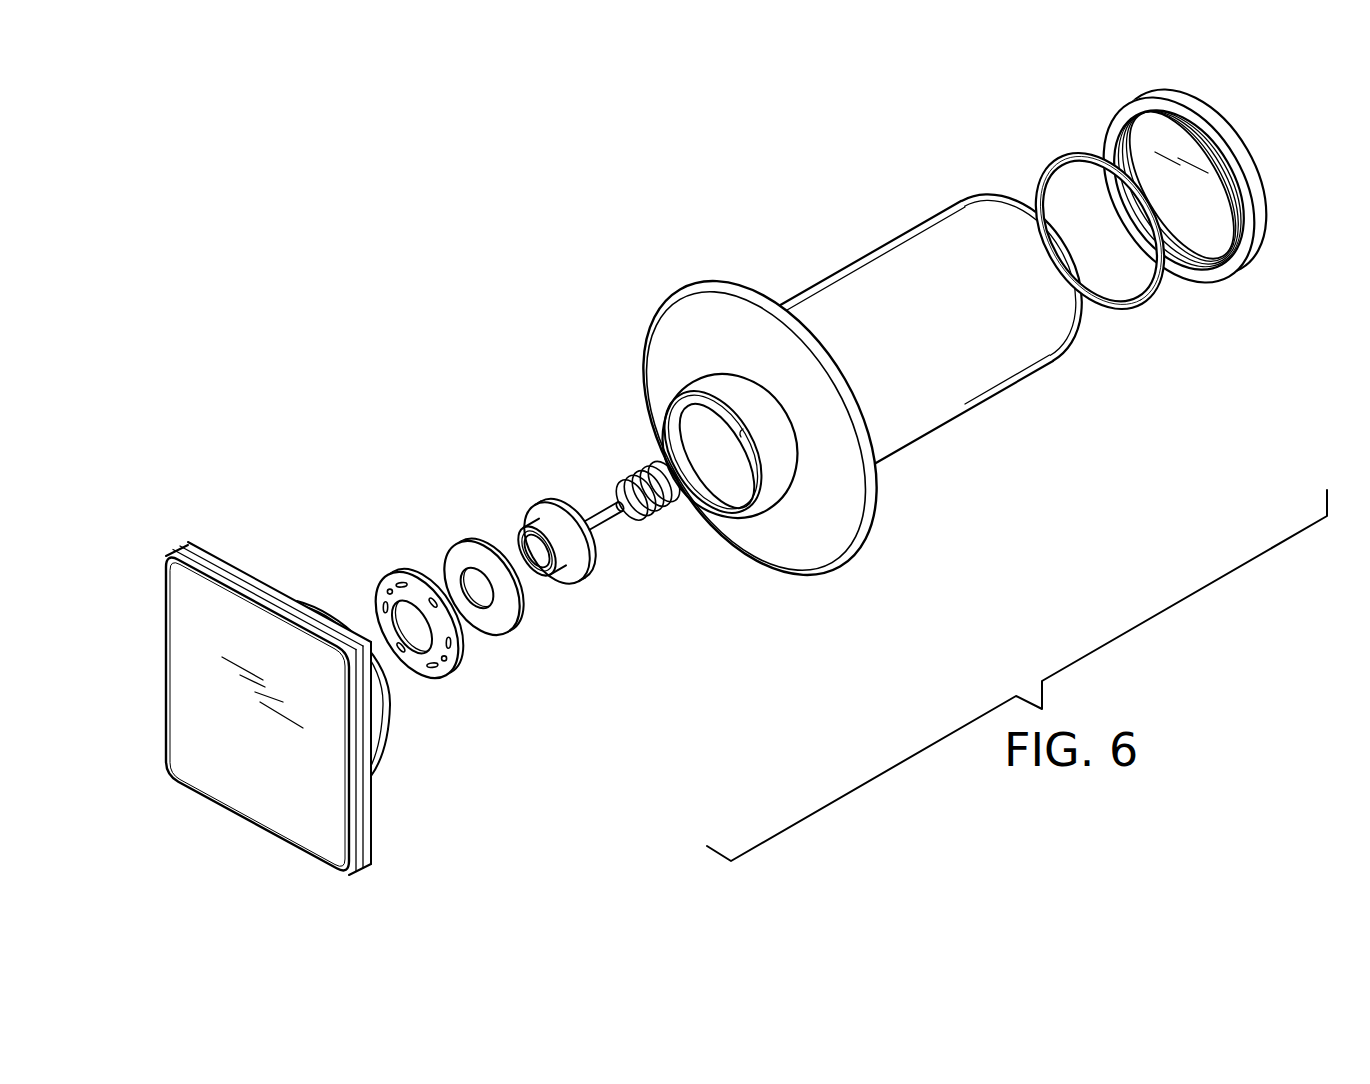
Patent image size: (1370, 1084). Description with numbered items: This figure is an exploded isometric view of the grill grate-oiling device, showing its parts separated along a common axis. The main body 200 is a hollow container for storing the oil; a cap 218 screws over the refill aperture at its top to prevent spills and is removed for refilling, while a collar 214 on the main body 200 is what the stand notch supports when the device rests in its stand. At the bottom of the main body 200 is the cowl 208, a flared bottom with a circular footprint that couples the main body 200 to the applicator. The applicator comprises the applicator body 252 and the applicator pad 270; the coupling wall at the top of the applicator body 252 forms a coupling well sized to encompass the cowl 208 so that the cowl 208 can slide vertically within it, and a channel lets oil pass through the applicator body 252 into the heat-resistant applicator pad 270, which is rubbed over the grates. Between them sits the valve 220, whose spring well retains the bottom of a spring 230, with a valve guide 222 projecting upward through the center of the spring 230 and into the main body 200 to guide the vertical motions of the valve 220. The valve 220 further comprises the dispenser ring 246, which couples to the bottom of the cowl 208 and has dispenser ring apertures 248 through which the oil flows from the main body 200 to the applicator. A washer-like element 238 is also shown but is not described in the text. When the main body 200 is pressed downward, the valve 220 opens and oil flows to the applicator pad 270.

The main body 200 is at (953, 398).
The cowl 208 is at (728, 392).
The collar 214 is at (761, 292).
The cap 218 is at (1258, 178).
The valve 220 is at (547, 503).
The valve guide 222 is at (608, 518).
The spring 230 is at (660, 514).
The washer 238 is at (476, 540).
The dispenser ring 246 is at (442, 613).
The dispenser ring apertures 248 is at (424, 593).
The applicator body 252 is at (368, 782).
The applicator pad 270 is at (252, 792).